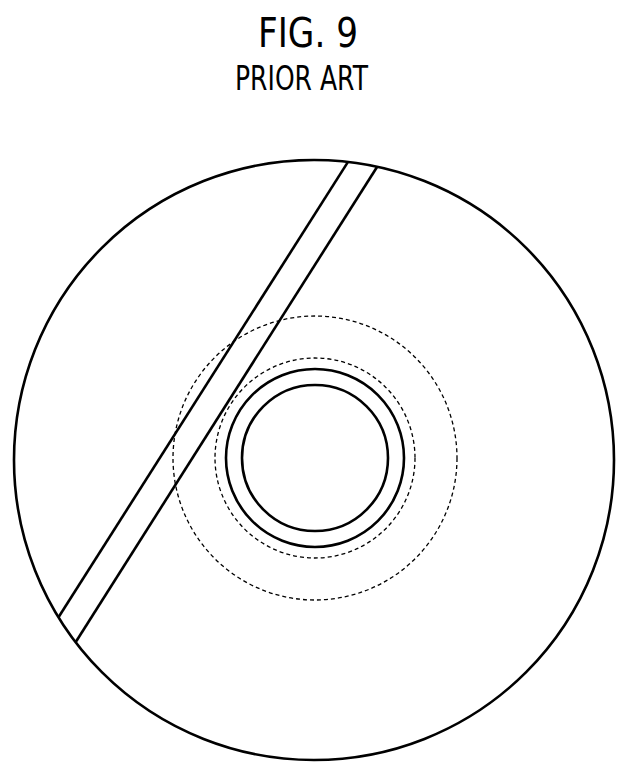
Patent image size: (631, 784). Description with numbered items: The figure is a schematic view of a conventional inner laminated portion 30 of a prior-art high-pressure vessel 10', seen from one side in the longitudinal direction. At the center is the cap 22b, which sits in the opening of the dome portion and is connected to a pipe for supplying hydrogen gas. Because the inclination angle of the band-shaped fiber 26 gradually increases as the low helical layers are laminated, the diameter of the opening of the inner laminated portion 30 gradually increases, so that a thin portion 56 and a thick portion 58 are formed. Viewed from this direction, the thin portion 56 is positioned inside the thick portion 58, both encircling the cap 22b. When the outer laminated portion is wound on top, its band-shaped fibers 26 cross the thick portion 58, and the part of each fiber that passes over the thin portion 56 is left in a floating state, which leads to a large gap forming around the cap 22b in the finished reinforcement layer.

The conventional high-pressure vessel 10' is at (314, 431).
The band-shaped fiber 26 is at (338, 197).
The cap 22b is at (327, 380).
The thin portion 56 is at (413, 460).
The thick portion 58 is at (437, 383).
The inner laminated portion 30 is at (481, 653).